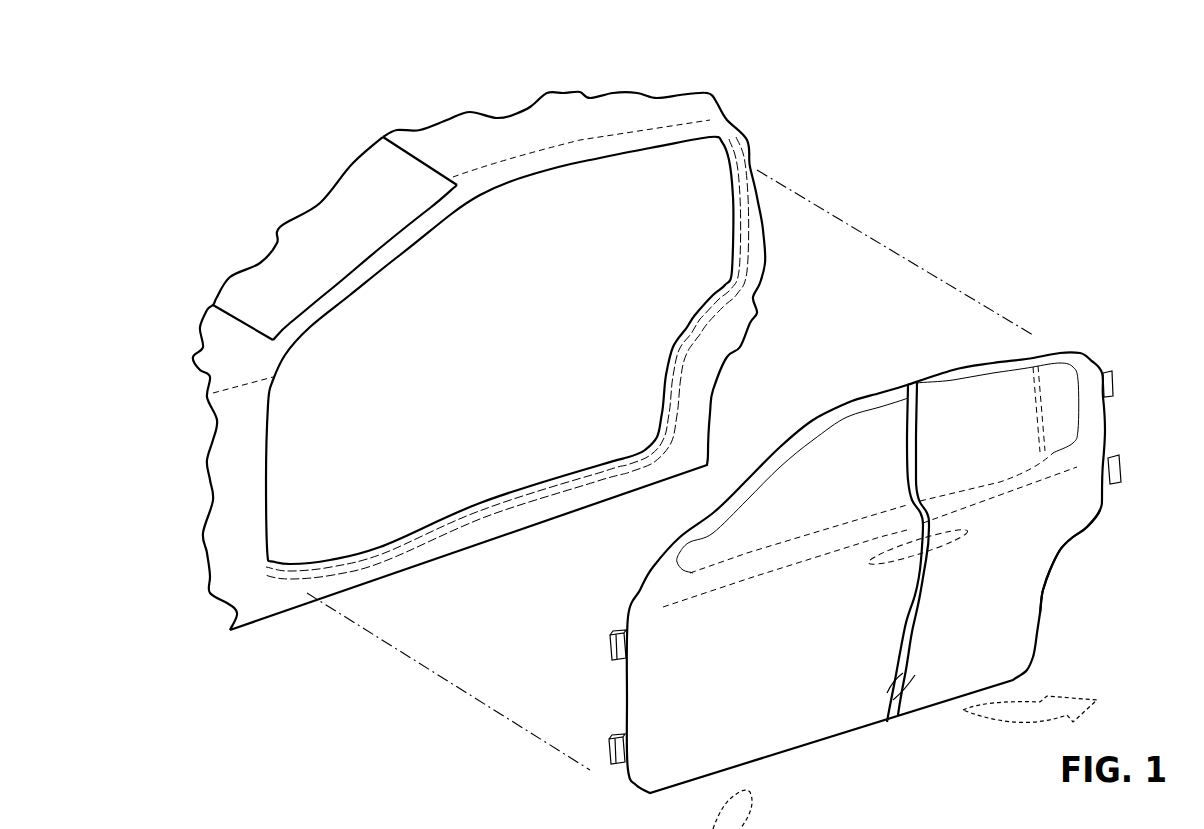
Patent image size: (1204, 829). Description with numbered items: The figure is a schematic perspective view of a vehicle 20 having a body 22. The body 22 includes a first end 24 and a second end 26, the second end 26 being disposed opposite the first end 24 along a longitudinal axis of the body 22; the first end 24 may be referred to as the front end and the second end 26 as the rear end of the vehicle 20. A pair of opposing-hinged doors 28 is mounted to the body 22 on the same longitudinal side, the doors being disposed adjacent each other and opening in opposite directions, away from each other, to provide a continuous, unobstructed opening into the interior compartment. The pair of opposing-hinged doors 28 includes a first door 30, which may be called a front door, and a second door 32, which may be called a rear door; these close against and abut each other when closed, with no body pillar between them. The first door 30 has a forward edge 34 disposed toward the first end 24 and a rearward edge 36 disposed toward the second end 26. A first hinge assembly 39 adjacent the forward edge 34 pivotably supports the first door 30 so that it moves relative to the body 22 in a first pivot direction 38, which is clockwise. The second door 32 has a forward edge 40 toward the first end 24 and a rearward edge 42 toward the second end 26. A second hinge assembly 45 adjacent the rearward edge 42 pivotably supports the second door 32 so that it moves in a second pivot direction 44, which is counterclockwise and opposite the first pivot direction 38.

The vehicle 20 is at (757, 90).
The body 22 is at (590, 103).
The first end 24 is at (228, 468).
The second end 26 is at (753, 232).
The pair of opposing-hinged doors 28 is at (883, 731).
The first door 30 is at (793, 752).
The second door 32 is at (933, 707).
The forward edge 34 is at (627, 690).
The rearward edge 36 is at (905, 697).
The first pivot direction 38 is at (663, 827).
The first hinge assembly 39 is at (603, 652).
The forward edge 40 is at (907, 667).
The rearward edge 42 is at (1067, 543).
The second pivot direction 44 is at (1070, 690).
The second hinge assembly 45 is at (1120, 470).